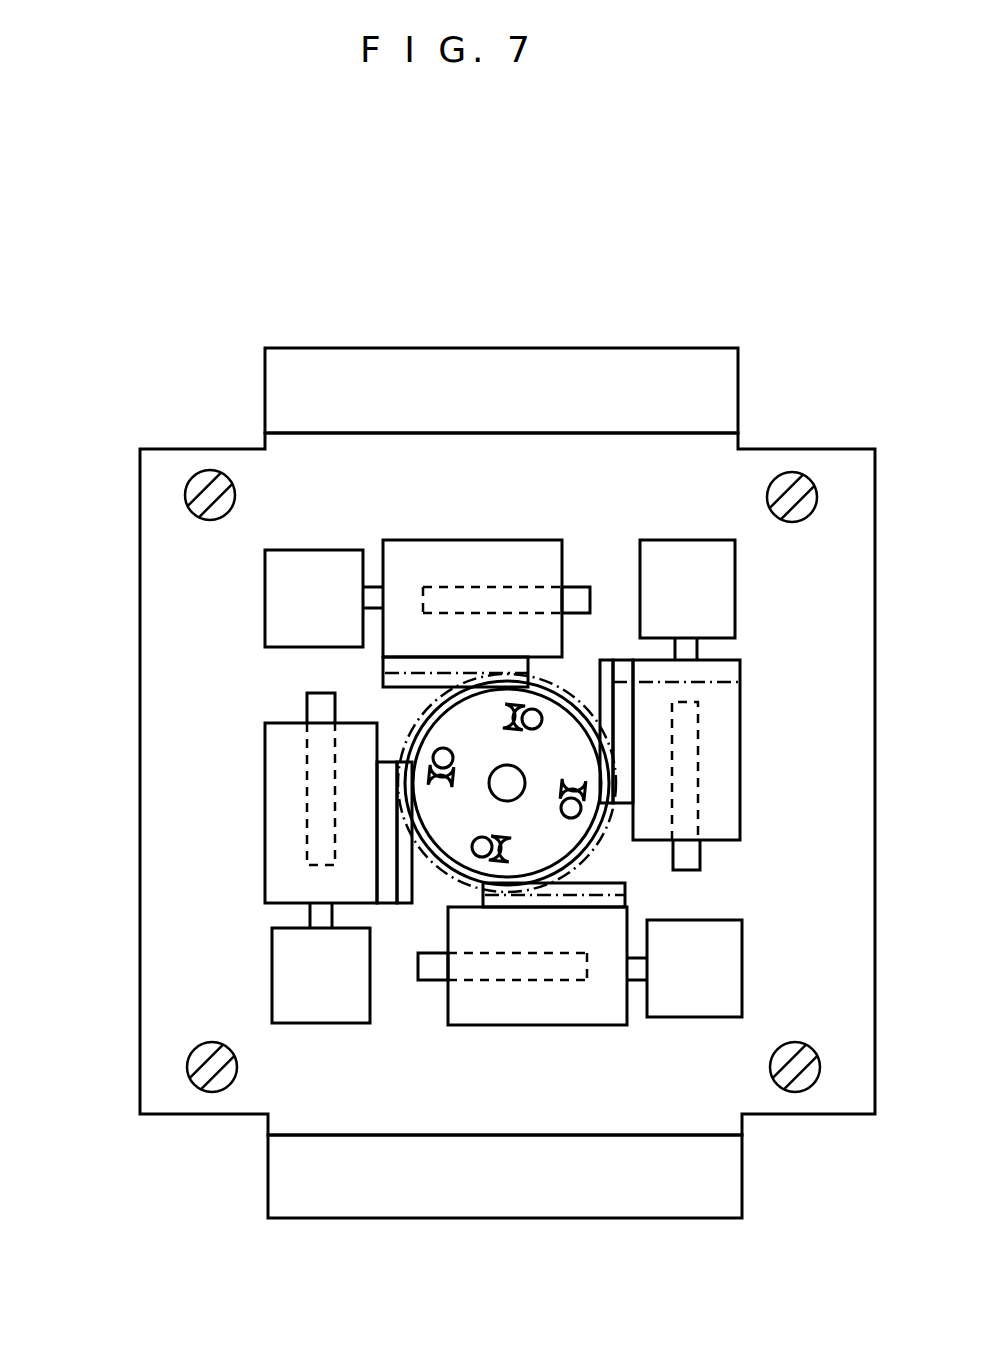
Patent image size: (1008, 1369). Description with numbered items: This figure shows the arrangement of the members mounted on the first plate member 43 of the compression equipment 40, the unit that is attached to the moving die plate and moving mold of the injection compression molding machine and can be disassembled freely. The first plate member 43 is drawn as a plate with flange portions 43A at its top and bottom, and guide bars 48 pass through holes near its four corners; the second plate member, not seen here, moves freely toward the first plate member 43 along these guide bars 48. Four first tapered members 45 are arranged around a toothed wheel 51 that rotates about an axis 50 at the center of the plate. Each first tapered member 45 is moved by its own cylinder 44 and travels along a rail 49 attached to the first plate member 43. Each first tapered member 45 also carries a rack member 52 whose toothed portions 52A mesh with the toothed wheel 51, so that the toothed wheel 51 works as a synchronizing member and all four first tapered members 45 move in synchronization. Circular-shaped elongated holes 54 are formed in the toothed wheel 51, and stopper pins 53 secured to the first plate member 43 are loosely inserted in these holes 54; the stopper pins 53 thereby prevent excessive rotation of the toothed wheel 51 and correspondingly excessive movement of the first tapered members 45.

The compression equipment 40 is at (559, 297).
The first plate member 43 is at (157, 988).
The mounting flange of base plate 43A is at (688, 367).
The cylinder 44 is at (315, 562).
The first tapered member 45 is at (493, 557).
The guide bar 48 is at (212, 483).
The rail 49 is at (580, 587).
The axis 50 is at (510, 780).
The toothed wheel 51 is at (555, 832).
The rack member 52 is at (620, 777).
The toothed portions 52A is at (690, 680).
The stopper pin 53 is at (533, 712).
The circular-shaped elongated hole 54 is at (503, 705).